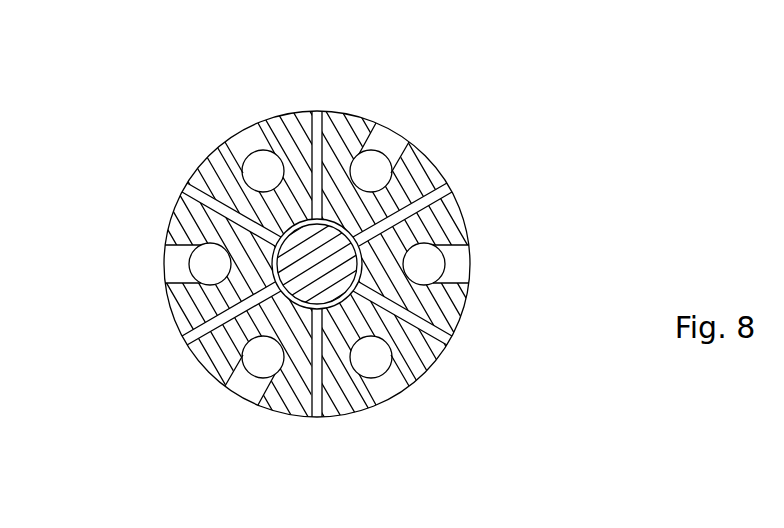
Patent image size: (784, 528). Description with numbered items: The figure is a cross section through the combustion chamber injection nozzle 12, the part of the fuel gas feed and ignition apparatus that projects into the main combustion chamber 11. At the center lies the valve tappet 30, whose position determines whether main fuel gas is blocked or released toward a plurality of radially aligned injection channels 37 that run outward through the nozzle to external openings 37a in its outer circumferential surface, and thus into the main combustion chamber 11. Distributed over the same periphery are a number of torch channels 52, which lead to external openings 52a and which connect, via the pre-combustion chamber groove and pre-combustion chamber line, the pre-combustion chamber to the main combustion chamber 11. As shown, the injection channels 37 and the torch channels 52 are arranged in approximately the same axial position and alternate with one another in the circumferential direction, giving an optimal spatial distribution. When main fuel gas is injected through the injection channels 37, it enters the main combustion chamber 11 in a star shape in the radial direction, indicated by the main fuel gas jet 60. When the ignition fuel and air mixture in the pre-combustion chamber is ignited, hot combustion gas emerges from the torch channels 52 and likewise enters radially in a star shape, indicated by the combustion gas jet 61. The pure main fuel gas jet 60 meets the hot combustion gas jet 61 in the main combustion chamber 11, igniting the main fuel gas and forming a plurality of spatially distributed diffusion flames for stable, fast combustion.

The main combustion chamber 11 is at (64, 497).
The combustion chamber injection nozzle 12 is at (190, 288).
The valve tappet 30 is at (318, 253).
The injection channels 37 is at (415, 208).
The external openings 37a is at (450, 190).
The torch channels 52 is at (160, 257).
The external openings 52a is at (163, 267).
The main fuel gas jet 60 is at (202, 255).
The combustion gas jet 61 is at (182, 72).